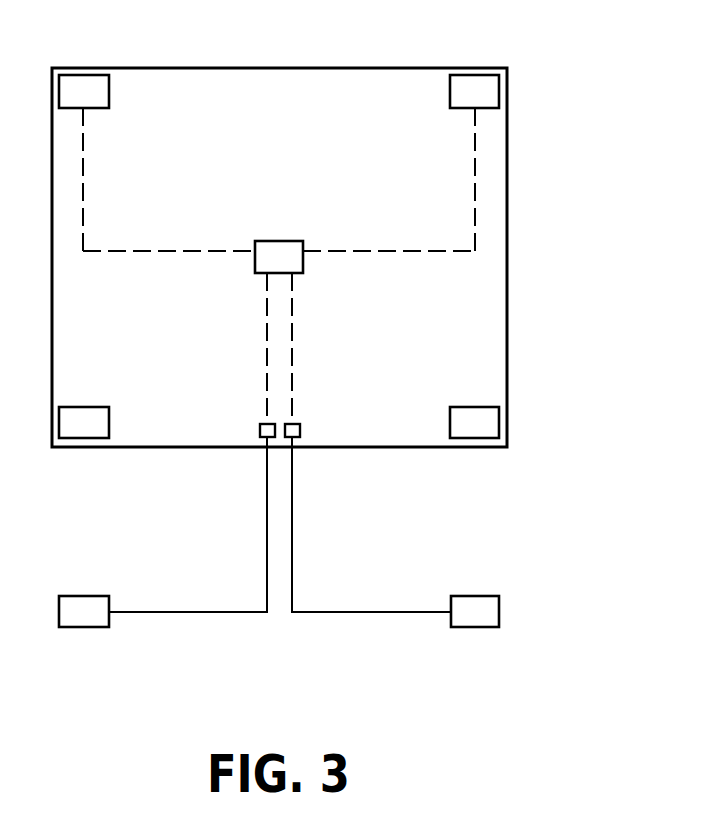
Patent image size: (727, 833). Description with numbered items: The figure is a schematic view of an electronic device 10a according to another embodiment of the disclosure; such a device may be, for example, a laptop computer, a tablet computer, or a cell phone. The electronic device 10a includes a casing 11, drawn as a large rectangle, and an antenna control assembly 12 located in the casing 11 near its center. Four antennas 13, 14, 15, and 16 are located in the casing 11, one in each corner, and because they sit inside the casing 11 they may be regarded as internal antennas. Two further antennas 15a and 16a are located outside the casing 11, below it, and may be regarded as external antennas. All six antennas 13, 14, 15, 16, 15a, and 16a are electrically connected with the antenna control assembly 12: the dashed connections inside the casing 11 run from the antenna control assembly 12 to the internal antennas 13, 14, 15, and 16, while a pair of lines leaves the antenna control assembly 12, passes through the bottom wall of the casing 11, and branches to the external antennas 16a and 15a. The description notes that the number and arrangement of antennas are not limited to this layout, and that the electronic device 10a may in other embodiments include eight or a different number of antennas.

The electronic device 10a is at (333, 370).
The casing 11 is at (507, 257).
The antenna control assembly 12 is at (279, 241).
The antenna 13 is at (83, 85).
The antenna 14 is at (478, 85).
The antenna 15 is at (475, 427).
The antenna 16 is at (86, 427).
The antenna 15a is at (475, 617).
The antenna 16a is at (86, 617).